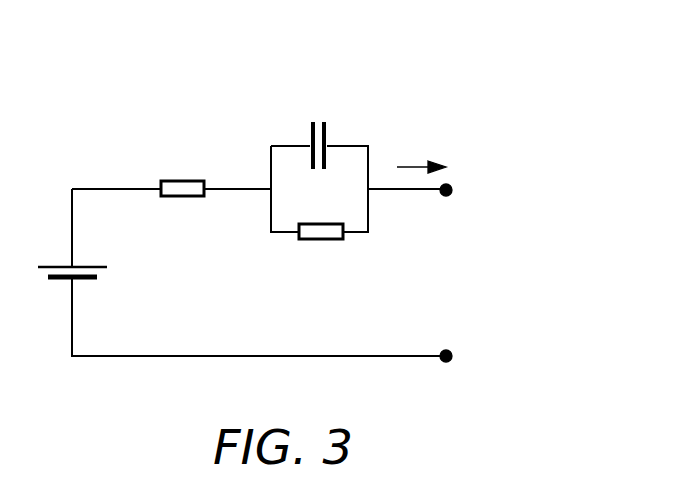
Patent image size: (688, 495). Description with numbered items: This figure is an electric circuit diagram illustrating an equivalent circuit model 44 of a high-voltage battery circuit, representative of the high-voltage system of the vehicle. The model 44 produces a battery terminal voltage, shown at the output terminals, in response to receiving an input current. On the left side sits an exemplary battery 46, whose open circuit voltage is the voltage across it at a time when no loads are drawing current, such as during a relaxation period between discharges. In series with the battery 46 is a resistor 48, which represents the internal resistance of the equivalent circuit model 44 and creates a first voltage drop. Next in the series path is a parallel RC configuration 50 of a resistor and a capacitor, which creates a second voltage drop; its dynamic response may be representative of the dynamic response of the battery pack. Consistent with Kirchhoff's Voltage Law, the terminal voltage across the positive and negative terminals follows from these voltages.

The equivalent circuit model 44 is at (262, 72).
The battery 46 is at (64, 265).
The resistor R0 48 is at (165, 180).
The parallel RC configuration 50 is at (347, 146).